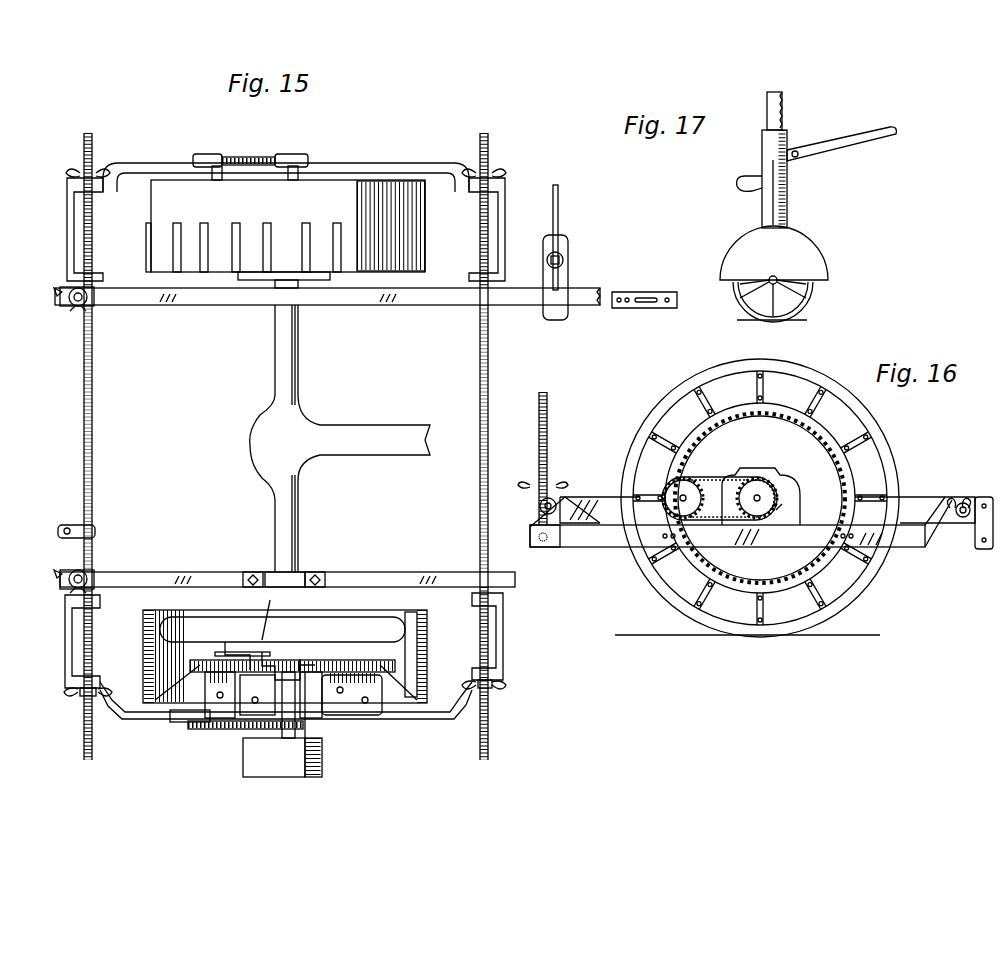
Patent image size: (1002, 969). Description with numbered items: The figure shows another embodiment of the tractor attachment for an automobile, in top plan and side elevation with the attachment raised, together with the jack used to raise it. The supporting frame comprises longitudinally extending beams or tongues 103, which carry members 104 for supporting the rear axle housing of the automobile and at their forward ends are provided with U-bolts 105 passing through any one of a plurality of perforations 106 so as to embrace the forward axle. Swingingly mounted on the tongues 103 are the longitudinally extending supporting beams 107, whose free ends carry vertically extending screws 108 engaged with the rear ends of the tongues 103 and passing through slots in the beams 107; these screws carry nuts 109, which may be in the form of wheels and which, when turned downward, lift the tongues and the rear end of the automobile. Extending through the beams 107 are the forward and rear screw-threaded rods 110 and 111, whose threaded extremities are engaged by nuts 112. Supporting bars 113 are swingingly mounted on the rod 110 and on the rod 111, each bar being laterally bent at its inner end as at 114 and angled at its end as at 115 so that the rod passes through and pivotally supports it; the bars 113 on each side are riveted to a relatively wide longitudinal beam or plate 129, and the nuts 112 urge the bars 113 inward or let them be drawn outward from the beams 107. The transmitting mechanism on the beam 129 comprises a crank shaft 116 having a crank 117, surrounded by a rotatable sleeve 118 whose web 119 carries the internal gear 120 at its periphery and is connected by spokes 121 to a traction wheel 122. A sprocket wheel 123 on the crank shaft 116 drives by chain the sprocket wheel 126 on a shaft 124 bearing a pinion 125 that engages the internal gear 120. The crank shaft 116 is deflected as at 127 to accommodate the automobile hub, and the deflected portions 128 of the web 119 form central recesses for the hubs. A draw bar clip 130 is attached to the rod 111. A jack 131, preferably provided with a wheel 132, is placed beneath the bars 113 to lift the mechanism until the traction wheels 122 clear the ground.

In FIG. 15, the beams or tongues 103 is at (585, 292).
In FIG. 16, the beams or tongues 103 is at (575, 547).
In FIG. 15, the members 104 is at (305, 572).
In FIG. 15, the U-bolts 105 is at (650, 298).
In FIG. 15, the perforations 106 is at (627, 304).
In FIG. 15, the supporting beams 107 is at (302, 300).
In FIG. 16, the supporting beams 107 is at (600, 497).
In FIG. 15, the screws 108 is at (62, 296).
In FIG. 16, the screws 108 is at (548, 450).
In FIG. 15, the nuts 109 is at (80, 568).
In FIG. 15, the forward screw-threaded rod 110 is at (488, 345).
In FIG. 15, the rear screw-threaded rod 111 is at (84, 340).
In FIG. 15, the nuts 112 is at (74, 177).
In FIG. 16, the nuts 112 is at (960, 500).
In FIG. 15, the supporting bars 113 is at (402, 173).
In FIG. 16, the supporting bars 113 is at (905, 547).
In FIG. 15, the laterally bent portion 114 is at (67, 235).
In FIG. 15, the angled end 115 is at (472, 598).
In FIG. 15, the crank shaft 116 is at (296, 176).
In FIG. 16, the crank shaft 116 is at (762, 495).
In FIG. 15, the crank 117 is at (227, 642).
In FIG. 15, the rotatable sleeve 118 is at (305, 715).
In FIG. 15, the web 119 is at (245, 689).
In FIG. 15, the internal gear 120 is at (345, 712).
In FIG. 16, the internal gear 120 is at (795, 468).
In FIG. 15, the spokes 121 is at (150, 658).
In FIG. 16, the spokes 121 is at (755, 375).
In FIG. 15, the traction wheel 122 is at (410, 222).
In FIG. 16, the traction wheel 122 is at (860, 405).
In FIG. 15, the sprocket wheel 123 is at (300, 158).
In FIG. 16, the sprocket wheel 123 is at (750, 480).
In FIG. 15, the shaft 124 is at (193, 160).
In FIG. 16, the shaft 124 is at (663, 510).
In FIG. 15, the pinion 125 is at (182, 617).
In FIG. 15, the sprocket wheel 126 is at (230, 157).
In FIG. 16, the sprocket wheel 126 is at (668, 494).
In FIG. 15, the deflected portion 127 is at (300, 600).
In FIG. 15, the deflected portions 128 is at (295, 655).
In FIG. 15, the longitudinal beam or plate 129 is at (310, 720).
In FIG. 16, the longitudinal beam or plate 129 is at (775, 560).
In FIG. 15, the draw bar clip 130 is at (68, 525).
In FIG. 15, the jack 131 is at (560, 262).
In FIG. 17, the jack 131 is at (780, 218).
In FIG. 17, the wheel 132 is at (734, 297).